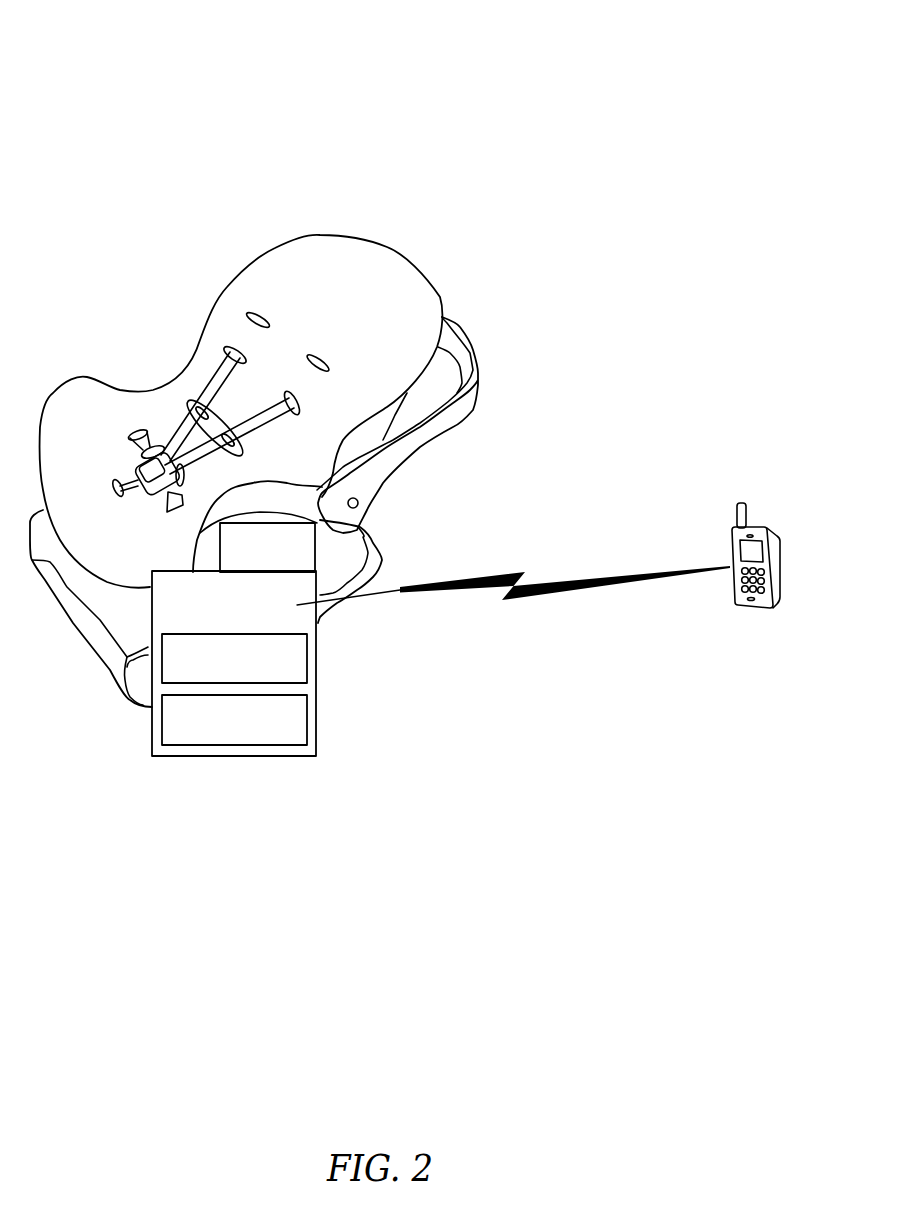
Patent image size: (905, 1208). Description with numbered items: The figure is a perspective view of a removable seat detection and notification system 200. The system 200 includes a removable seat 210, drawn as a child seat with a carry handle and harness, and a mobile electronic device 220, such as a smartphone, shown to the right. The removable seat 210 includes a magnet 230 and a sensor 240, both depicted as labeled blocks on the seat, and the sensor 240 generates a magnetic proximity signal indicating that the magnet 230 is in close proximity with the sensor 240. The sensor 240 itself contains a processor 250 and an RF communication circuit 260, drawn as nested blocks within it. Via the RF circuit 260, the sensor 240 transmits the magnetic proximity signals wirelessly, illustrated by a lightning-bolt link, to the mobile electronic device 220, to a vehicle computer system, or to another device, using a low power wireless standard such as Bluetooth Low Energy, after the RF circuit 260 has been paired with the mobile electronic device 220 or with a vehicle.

The removable seat detection and notification system 200 is at (734, 48).
The removable seat 210 is at (228, 285).
The mobile electronic device 220 is at (732, 528).
The magnet 230 is at (253, 569).
The sensor 240 is at (219, 624).
The processor 250 is at (219, 680).
The RF communication circuit 260 is at (219, 741).